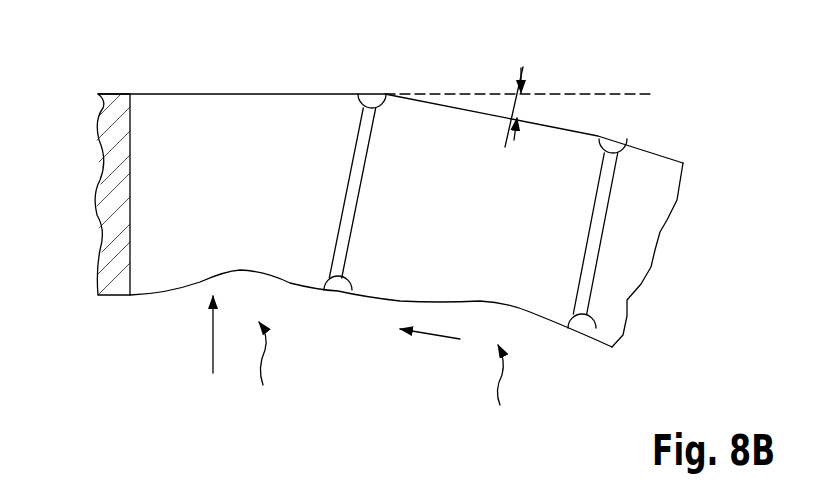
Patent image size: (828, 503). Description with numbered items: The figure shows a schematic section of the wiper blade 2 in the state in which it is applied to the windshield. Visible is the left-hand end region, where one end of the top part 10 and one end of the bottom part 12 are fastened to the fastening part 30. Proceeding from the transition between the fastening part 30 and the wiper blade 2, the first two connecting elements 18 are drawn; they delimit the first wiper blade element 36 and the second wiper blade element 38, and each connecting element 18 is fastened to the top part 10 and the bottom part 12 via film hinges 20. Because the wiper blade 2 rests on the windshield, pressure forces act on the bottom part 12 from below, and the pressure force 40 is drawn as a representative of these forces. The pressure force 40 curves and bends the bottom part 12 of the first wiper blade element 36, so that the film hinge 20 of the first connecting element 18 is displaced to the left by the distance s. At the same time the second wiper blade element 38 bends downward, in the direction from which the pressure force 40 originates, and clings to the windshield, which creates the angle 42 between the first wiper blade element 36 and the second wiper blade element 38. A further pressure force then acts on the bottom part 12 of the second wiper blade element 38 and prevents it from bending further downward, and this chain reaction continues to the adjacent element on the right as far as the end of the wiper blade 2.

The wiper blade 2 is at (665, 302).
The top part 10 is at (237, 96).
The bottom part 12 is at (242, 270).
The connecting element 18 is at (362, 205).
The film hinge 20 is at (372, 97).
The fastening part 30 is at (108, 195).
The first wiper blade element 36 is at (260, 371).
The second wiper blade element 38 is at (500, 393).
The pressure force 40 is at (212, 343).
The angle 42 is at (518, 100).
The distance s is at (433, 335).